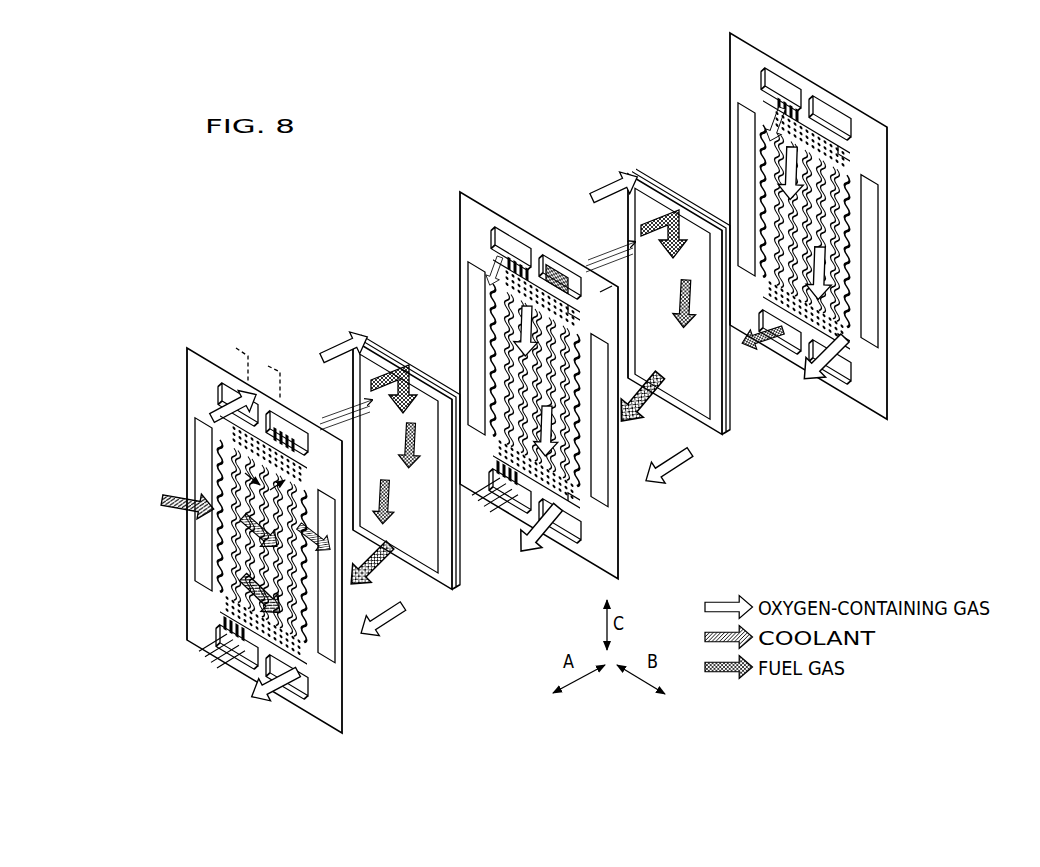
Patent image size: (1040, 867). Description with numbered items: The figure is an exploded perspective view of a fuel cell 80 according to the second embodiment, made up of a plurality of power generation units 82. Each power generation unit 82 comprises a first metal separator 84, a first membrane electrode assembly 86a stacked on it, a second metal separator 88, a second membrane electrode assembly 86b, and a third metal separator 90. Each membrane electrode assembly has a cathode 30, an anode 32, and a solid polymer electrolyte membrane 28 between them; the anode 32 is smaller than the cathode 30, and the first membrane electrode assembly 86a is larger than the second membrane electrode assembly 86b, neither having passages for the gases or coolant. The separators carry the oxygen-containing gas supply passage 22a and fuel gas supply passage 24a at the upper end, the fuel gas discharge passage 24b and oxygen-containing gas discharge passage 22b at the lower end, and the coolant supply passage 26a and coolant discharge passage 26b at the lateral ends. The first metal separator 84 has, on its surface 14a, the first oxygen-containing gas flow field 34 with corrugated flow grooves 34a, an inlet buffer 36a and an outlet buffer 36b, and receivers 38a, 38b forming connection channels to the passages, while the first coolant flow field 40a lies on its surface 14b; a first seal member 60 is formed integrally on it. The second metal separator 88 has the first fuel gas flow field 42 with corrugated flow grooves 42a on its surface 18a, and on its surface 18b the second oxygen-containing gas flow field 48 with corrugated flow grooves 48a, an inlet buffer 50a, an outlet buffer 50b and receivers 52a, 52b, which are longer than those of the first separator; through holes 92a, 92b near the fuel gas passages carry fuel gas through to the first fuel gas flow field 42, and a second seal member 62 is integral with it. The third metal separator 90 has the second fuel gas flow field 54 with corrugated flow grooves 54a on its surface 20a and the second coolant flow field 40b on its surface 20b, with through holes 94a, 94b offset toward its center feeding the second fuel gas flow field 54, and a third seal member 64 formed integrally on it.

The fuel cell 80 is at (531, 370).
The power generation unit 82 is at (531, 370).
The third metal separator 90 is at (266, 526).
The third seal member 64 is at (266, 528).
The surface 20a is at (266, 528).
The surface 20b is at (266, 528).
The oxygen-containing gas supply passage 22a is at (227, 402).
The oxygen-containing gas discharge passage 22b is at (297, 673).
The fuel gas supply passage 24a is at (303, 437).
The fuel gas discharge passage 24b is at (243, 643).
The coolant supply passage 26a is at (202, 468).
The coolant discharge passage 26b is at (327, 643).
The second fuel gas flow field 54 is at (220, 580).
The corrugated flow grooves 54a is at (230, 493).
The second coolant flow field 40b is at (247, 527).
The through holes 94a is at (302, 452).
The through holes 94b is at (223, 618).
The solid polymer electrolyte membrane 28 is at (527, 391).
The cathode 30 is at (391, 451).
The anode 32 is at (391, 451).
The first membrane electrode assembly 86a is at (628, 176).
The second membrane electrode assembly 86b is at (348, 340).
The second metal separator 88 is at (541, 377).
The second seal member 62 is at (541, 390).
The surface 18a is at (541, 390).
The surface 18b is at (541, 390).
The receivers 52a is at (530, 268).
The receivers 52b is at (585, 535).
The first fuel gas flow field 42 is at (533, 268).
The corrugated flow grooves 42a is at (498, 288).
The corrugated flow grooves 48a is at (497, 307).
The second oxygen-containing gas flow field 48 is at (533, 473).
The inlet buffer 50a is at (590, 318).
The outlet buffer 50b is at (573, 477).
The through holes 92a is at (590, 297).
The through holes 92b is at (507, 470).
The first metal separator 84 is at (807, 213).
The first seal member 60 is at (807, 226).
The surface 14a is at (807, 226).
The surface 14b is at (807, 226).
The first oxygen-containing gas flow field 34 is at (783, 143).
The corrugated flow grooves 34a is at (830, 257).
The inlet buffer 36a is at (840, 157).
The outlet buffer 36b is at (843, 327).
The receivers 38a is at (787, 102).
The receivers 38b is at (843, 357).
The first coolant flow field 40a is at (790, 131).